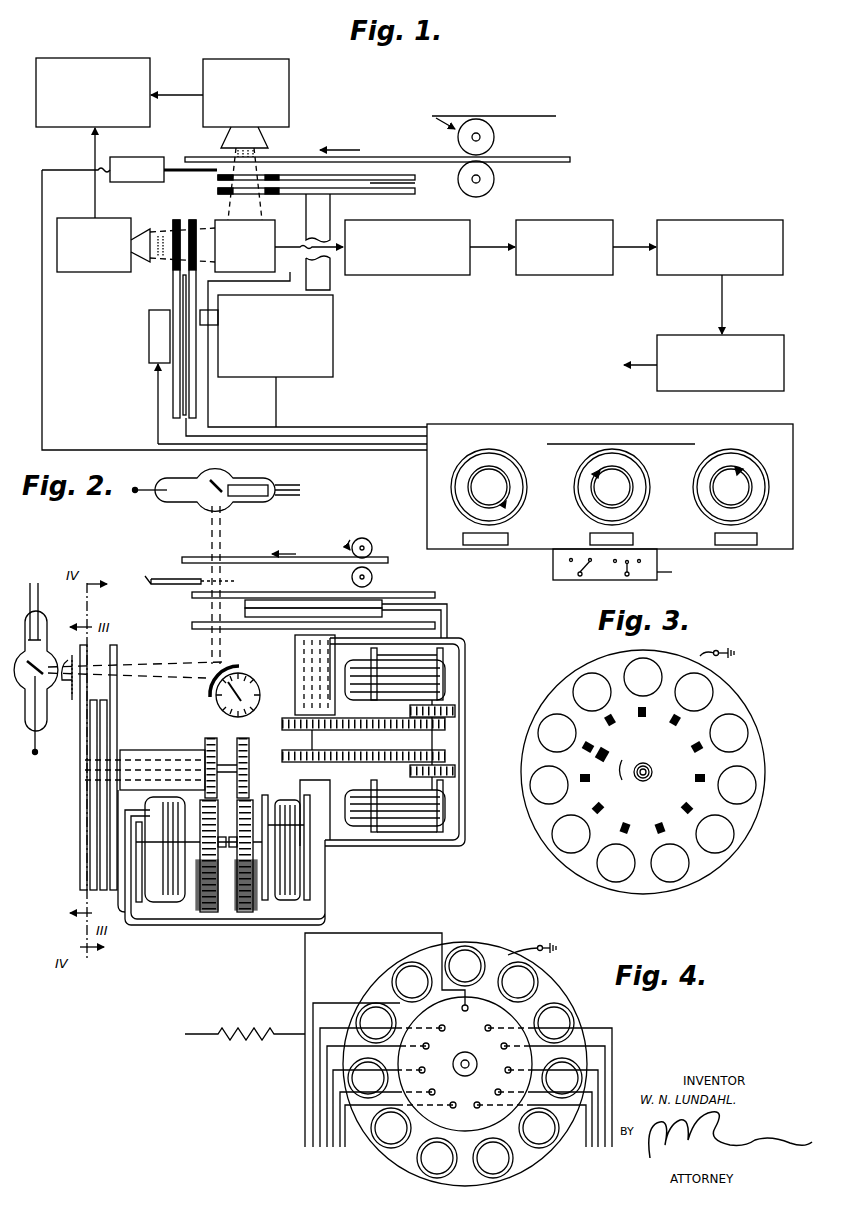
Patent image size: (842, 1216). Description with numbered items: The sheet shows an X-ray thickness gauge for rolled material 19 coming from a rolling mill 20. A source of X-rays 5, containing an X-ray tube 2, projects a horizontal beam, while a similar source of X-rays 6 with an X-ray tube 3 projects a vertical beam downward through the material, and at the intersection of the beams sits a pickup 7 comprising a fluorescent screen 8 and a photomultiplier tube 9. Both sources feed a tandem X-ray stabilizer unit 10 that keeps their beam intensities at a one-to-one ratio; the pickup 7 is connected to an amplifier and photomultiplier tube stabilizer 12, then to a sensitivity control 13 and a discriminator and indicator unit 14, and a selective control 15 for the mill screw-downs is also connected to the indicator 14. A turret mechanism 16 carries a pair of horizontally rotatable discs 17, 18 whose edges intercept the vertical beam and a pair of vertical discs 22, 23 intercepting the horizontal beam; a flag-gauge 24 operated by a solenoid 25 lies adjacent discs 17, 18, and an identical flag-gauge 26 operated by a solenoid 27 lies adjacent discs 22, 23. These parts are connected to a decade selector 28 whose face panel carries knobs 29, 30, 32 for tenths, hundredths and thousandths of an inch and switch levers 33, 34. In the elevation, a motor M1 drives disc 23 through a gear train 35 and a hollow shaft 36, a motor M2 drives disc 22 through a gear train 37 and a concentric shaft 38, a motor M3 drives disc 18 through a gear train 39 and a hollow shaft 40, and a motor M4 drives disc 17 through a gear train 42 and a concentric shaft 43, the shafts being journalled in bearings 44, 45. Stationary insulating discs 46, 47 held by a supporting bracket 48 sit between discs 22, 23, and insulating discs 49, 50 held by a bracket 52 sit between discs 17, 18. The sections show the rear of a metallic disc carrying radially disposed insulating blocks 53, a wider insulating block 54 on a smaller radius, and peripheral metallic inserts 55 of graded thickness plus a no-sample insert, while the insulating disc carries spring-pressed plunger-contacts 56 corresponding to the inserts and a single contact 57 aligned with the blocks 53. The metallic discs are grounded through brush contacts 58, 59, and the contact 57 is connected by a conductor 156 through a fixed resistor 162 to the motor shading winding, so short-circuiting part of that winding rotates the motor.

In FIG. 2, the X-ray tube 2 is at (44, 630).
In FIG. 2, the X-ray tube 3 is at (222, 505).
In FIG. 1, the source of X-rays 5 is at (95, 272).
In FIG. 1, the source of X-rays 6 is at (289, 92).
In FIG. 1, the pickup 7 is at (262, 222).
In FIG. 2, the fluorescent screen 8 is at (225, 666).
In FIG. 2, the photomultiplier tube 9 is at (261, 692).
In FIG. 1, the tandem X-ray stabilizer unit 10 is at (140, 60).
In FIG. 1, the amplifier and photomultiplier tube stabilizer 12 is at (410, 275).
In FIG. 1, the sensitivity control 13 is at (566, 275).
In FIG. 1, the discriminator and indicator unit 14 is at (755, 275).
In FIG. 1, the selective control 15 is at (735, 391).
In FIG. 1, the turret mechanism 16 is at (333, 345).
In FIG. 2, the turret mechanism 16 is at (184, 930).
In FIG. 1, the horizontally rotatable disc 17 is at (415, 178).
In FIG. 2, the horizontally rotatable disc 17 is at (380, 592).
In FIG. 1, the horizontally rotatable disc 18 is at (415, 192).
In FIG. 2, the horizontally rotatable disc 18 is at (440, 626).
In FIG. 1, the material 19 is at (394, 157).
In FIG. 2, the material 19 is at (302, 558).
In FIG. 1, the rolling mill 20 is at (494, 141).
In FIG. 2, the rolling mill 20 is at (370, 540).
In FIG. 1, the vertically disposed disc 22 is at (176, 388).
In FIG. 2, the vertically disposed disc 22 is at (80, 855).
In FIG. 3, the vertically disposed disc 22 is at (590, 668).
In FIG. 1, the vertically disposed disc 23 is at (195, 405).
In FIG. 2, the vertically disposed disc 23 is at (113, 870).
In FIG. 4, the vertically disposed disc 23 is at (565, 988).
In FIG. 1, the flag-gauge 24 is at (186, 172).
In FIG. 2, the flag-gauge 24 is at (176, 587).
In FIG. 1, the solenoid 25 is at (127, 157).
In FIG. 1, the flag-gauge 26 is at (173, 290).
In FIG. 2, the flag-gauge 26 is at (70, 662).
In FIG. 1, the solenoid 27 is at (133, 377).
In FIG. 1, the decade selector 28 is at (600, 424).
In FIG. 1, the knob 29 is at (476, 503).
In FIG. 1, the knob 30 is at (598, 502).
In FIG. 1, the knob 32 is at (715, 502).
In FIG. 1, the switch lever 33 is at (580, 578).
In FIG. 1, the switch lever 34 is at (675, 572).
In FIG. 2, the gear train 35 is at (220, 870).
In FIG. 2, the hollow shaft 36 is at (207, 745).
In FIG. 2, the gear train 37 is at (247, 900).
In FIG. 2, the shaft 38 is at (237, 760).
In FIG. 3, the shaft 38 is at (652, 770).
In FIG. 4, the shaft 38 is at (477, 1059).
In FIG. 2, the gear train 39 is at (455, 724).
In FIG. 2, the hollow shaft 40 is at (330, 718).
In FIG. 2, the gear train 42 is at (455, 760).
In FIG. 2, the concentric shaft 43 is at (318, 742).
In FIG. 2, the bearing 44 is at (150, 750).
In FIG. 2, the bearing 45 is at (295, 660).
In FIG. 2, the insulating disc 46 is at (93, 757).
In FIG. 4, the insulating disc 46 is at (510, 1122).
In FIG. 2, the insulating disc 47 is at (103, 783).
In FIG. 2, the supporting bracket 48 is at (118, 912).
In FIG. 2, the insulating disc 49 is at (262, 600).
In FIG. 2, the insulating disc 50 is at (290, 610).
In FIG. 2, the supporting bracket 52 is at (447, 608).
In FIG. 3, the insulating blocks 53 is at (642, 718).
In FIG. 3, the insulating block 54 is at (600, 756).
In FIG. 3, the metallic inserts 55 is at (713, 687).
In FIG. 4, the metallic inserts 55 is at (465, 958).
In FIG. 4, the spring-pressed plunger-contacts 56 is at (465, 1011).
In FIG. 4, the spring-pressed contact 57 is at (540, 1006).
In FIG. 3, the brush contact 58 is at (723, 640).
In FIG. 4, the brush contact 59 is at (540, 945).
In FIG. 4, the conductor 156 is at (305, 993).
In FIG. 4, the fixed resistor 162 is at (235, 1037).
In FIG. 2, the motor M1 is at (152, 848).
In FIG. 2, the motor M2 is at (296, 830).
In FIG. 2, the motor M3 is at (445, 680).
In FIG. 2, the motor M4 is at (445, 805).